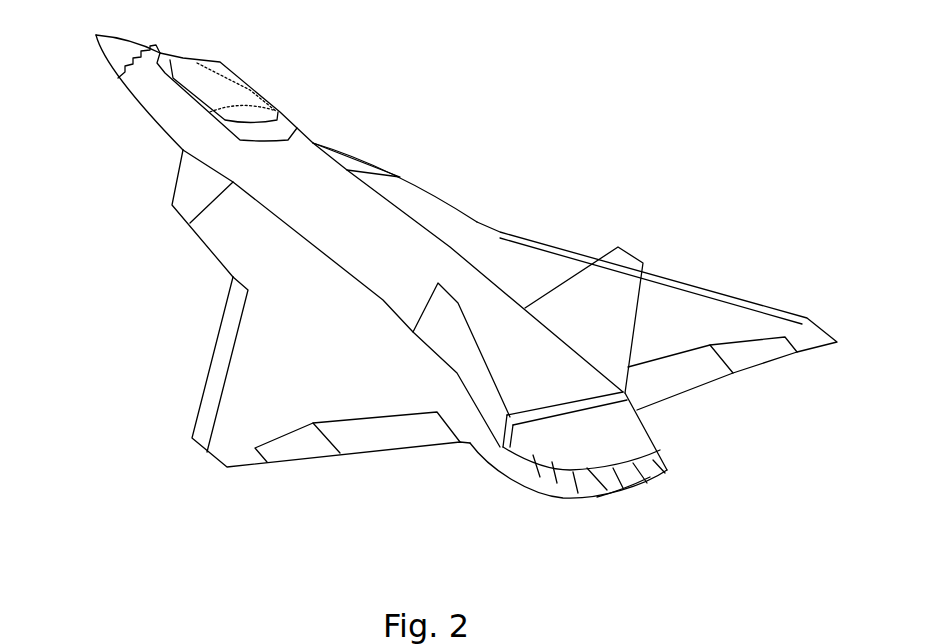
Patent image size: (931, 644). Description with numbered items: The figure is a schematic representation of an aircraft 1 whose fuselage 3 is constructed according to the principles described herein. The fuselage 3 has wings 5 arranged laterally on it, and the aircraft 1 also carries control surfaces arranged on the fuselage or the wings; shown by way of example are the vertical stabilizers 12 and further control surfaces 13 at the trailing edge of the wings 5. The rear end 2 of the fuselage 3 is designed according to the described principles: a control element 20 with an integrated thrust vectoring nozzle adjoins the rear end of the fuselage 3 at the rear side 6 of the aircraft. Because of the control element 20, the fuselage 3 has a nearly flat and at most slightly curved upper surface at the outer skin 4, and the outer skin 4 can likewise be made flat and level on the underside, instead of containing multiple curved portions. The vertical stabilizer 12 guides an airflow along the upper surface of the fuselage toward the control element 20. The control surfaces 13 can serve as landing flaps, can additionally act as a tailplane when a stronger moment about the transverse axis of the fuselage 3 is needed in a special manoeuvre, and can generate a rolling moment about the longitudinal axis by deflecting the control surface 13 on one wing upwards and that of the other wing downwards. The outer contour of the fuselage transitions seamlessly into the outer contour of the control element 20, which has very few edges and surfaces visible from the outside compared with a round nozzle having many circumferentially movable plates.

The aircraft 1 is at (425, 92).
The rear end 2 is at (522, 500).
The fuselage 3 is at (298, 157).
The outer skin 4 is at (560, 373).
The wings 5 is at (265, 385).
The rear side 6 is at (635, 510).
The vertical stabilizer 12 is at (610, 315).
The control surfaces 13 is at (368, 432).
The control element with integrated thrust vectoring nozzle 20 is at (638, 438).